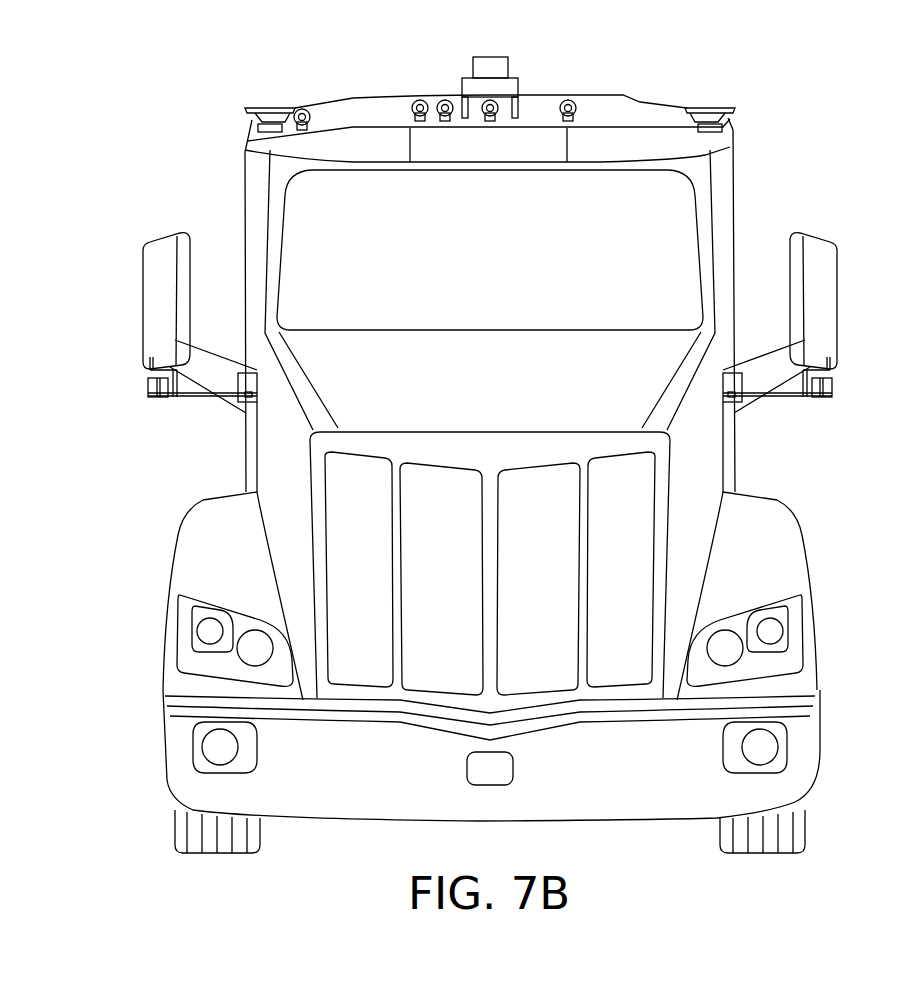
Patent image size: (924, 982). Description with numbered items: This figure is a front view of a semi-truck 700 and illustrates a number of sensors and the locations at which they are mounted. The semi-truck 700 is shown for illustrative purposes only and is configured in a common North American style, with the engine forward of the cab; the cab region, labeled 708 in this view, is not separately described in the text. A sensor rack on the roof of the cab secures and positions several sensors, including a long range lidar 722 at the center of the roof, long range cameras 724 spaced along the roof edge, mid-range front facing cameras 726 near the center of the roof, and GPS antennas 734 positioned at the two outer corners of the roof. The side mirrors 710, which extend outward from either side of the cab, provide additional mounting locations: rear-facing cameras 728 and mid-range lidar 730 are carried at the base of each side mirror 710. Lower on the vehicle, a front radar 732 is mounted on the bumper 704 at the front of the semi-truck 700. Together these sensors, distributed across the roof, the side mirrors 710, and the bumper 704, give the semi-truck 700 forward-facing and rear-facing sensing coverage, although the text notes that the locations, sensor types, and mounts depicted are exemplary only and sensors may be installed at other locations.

The semi-truck 700 is at (187, 74).
The bumper 704 is at (603, 797).
The windshield 708 is at (705, 235).
The side mirrors 710 is at (157, 232).
The long range lidar 722 is at (490, 58).
The long range cameras 724 is at (420, 100).
The mid-range front facing cameras 726 is at (488, 100).
The rear-facing cameras 728 is at (186, 390).
The mid-range lidar 730 is at (147, 387).
The front radar 732 is at (483, 768).
The GPS antennas 734 is at (272, 107).